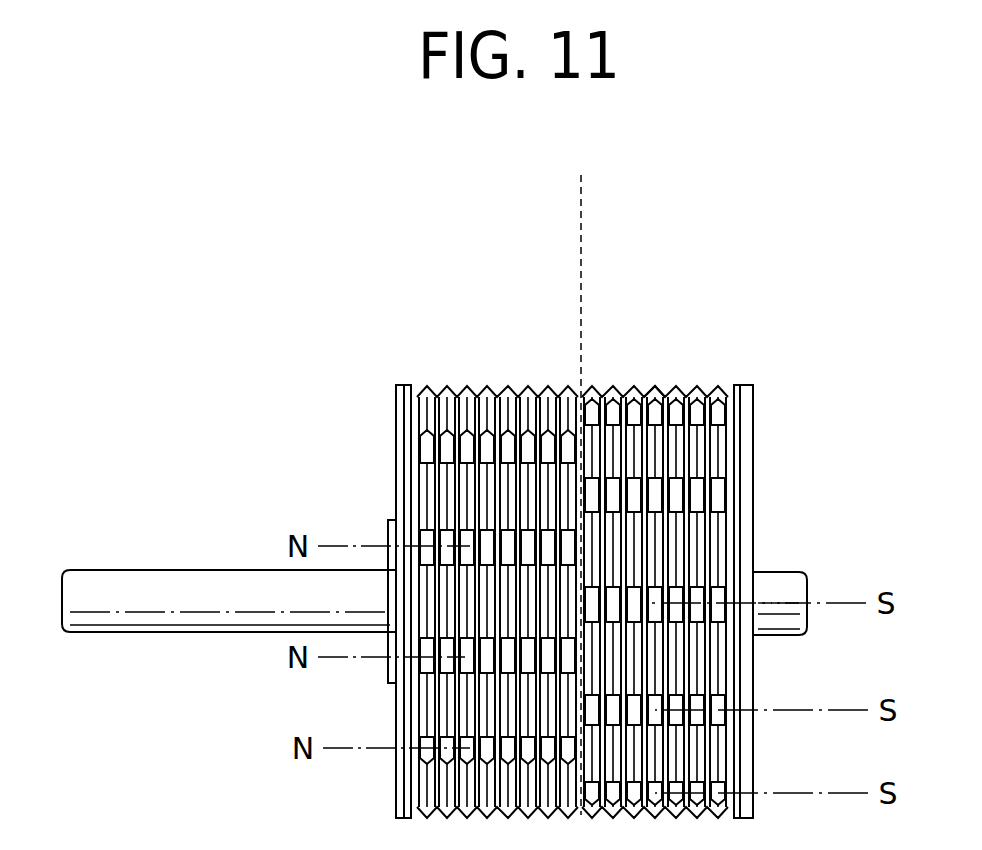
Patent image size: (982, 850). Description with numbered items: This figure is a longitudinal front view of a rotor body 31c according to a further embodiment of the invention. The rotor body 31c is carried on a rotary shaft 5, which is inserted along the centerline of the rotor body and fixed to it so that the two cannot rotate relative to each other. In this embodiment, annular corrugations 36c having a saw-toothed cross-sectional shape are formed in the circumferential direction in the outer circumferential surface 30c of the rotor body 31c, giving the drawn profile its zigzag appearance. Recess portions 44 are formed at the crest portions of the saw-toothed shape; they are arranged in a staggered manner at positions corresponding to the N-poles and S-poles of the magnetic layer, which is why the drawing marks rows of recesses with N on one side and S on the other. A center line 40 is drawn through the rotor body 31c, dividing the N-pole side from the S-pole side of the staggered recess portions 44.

The rotary shaft 5 is at (155, 570).
The outer circumferential surface 30c is at (703, 389).
The rotor body 31c is at (753, 497).
The annular corrugations 36c is at (660, 390).
The axial center dividing line 40 is at (582, 220).
The recess portions 44 is at (420, 743).